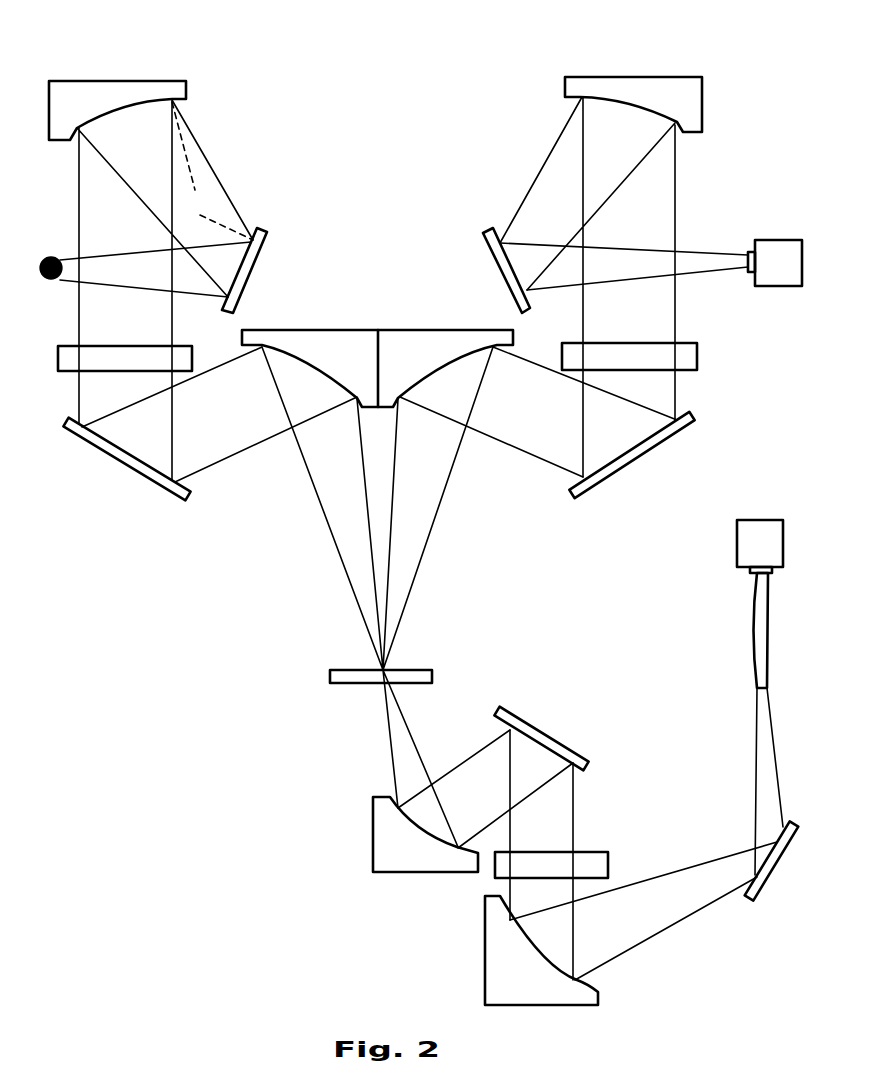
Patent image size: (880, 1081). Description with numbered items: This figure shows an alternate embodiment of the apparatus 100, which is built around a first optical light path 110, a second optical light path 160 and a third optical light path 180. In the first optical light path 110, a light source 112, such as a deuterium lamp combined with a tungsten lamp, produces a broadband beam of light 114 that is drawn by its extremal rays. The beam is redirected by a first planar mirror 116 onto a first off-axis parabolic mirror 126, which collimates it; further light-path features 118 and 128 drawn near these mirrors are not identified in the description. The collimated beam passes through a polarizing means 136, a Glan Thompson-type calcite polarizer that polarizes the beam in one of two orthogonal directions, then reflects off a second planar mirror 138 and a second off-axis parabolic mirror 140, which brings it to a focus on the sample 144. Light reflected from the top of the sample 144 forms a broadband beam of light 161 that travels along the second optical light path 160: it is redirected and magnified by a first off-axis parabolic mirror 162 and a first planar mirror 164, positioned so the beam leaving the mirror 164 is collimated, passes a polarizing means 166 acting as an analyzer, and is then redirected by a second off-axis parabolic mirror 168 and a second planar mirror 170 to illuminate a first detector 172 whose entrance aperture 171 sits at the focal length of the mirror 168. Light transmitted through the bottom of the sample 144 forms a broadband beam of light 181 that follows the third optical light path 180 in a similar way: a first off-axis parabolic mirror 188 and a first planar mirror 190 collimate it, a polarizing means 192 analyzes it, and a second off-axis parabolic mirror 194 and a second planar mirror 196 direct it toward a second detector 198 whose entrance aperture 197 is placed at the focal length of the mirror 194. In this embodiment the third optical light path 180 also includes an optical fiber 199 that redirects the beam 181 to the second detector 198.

The apparatus 100 is at (212, 660).
The first optical light path 110 is at (272, 156).
The light source 112 is at (45, 280).
The broadband beam of light 114 is at (117, 288).
The first planar mirror 116 is at (262, 258).
The reflected light path 118 is at (228, 220).
The first off-axis parabolic mirror 126 is at (170, 80).
The light path 128 is at (192, 177).
The polarizing means 136 is at (58, 360).
The second planar mirror 138 is at (113, 458).
The second off-axis parabolic mirror 140 is at (283, 330).
The sample 144 is at (330, 675).
The second optical light path 160 is at (500, 148).
The broadband beam of light 161 is at (393, 550).
The first off-axis parabolic mirror 162 is at (468, 330).
The first planar mirror 164 is at (630, 465).
The polarizing means 166 is at (695, 370).
The second off-axis parabolic mirror 168 is at (703, 107).
The second planar mirror 170 is at (483, 245).
The entrance aperture 171 is at (753, 272).
The first detector 172 is at (782, 240).
The third optical light path 180 is at (220, 866).
The broadband beam of light 181 is at (403, 730).
The first off-axis parabolic mirror 188 is at (373, 843).
The first planar mirror 190 is at (540, 730).
The polarizing means 192 is at (590, 850).
The second off-axis parabolic mirror 194 is at (600, 1000).
The second planar mirror 196 is at (770, 880).
The entrance aperture 197 is at (768, 573).
The second detector 198 is at (763, 520).
The optical fiber 199 is at (755, 612).